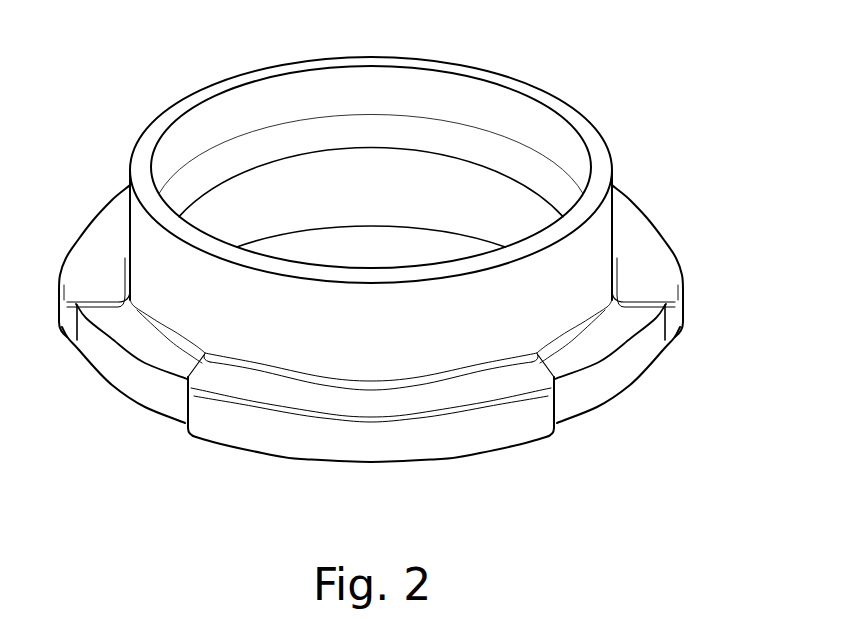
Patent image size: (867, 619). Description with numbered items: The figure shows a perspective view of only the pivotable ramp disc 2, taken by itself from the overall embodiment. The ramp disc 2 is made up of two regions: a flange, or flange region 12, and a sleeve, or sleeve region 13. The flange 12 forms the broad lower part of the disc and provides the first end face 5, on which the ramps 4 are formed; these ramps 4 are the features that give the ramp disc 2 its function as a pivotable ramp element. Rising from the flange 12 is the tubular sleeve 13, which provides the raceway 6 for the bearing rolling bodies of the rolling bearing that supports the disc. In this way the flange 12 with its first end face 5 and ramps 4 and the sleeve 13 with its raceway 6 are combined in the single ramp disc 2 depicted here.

The ramp disc 2 is at (173, 280).
The ramps 4 is at (436, 464).
The first end face 5 is at (343, 463).
The raceway 6 is at (497, 111).
The flange 12 is at (173, 370).
The sleeve 13 is at (597, 232).